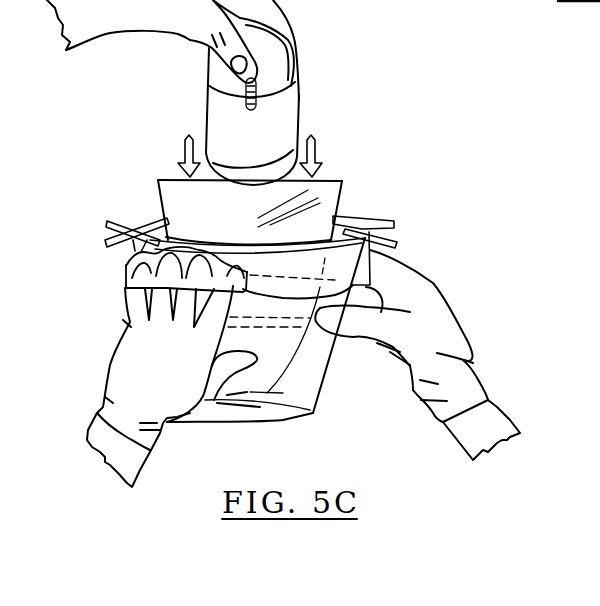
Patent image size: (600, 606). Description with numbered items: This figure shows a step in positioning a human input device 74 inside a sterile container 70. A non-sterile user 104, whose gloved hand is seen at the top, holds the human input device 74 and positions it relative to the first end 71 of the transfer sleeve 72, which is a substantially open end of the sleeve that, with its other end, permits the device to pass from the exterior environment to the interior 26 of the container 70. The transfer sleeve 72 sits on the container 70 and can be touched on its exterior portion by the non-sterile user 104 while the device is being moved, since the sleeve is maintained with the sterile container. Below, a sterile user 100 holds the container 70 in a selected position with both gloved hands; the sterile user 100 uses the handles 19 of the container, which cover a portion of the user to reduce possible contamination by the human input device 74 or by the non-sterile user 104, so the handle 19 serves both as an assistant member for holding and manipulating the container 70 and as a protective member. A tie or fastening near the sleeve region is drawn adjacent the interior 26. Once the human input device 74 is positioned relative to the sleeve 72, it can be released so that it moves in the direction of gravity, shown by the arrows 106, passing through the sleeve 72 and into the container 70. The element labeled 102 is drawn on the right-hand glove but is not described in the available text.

The handle 19 is at (124, 282).
The interior 26 is at (377, 249).
The sterile container 70 is at (327, 404).
The first end 71 is at (330, 177).
The transfer sleeve 72 is at (330, 206).
The human input device 74 is at (227, 102).
The sterile user 100 is at (78, 420).
The hand 102 is at (443, 341).
The non-sterile user 104 is at (152, 58).
The arrows 106 is at (187, 146).